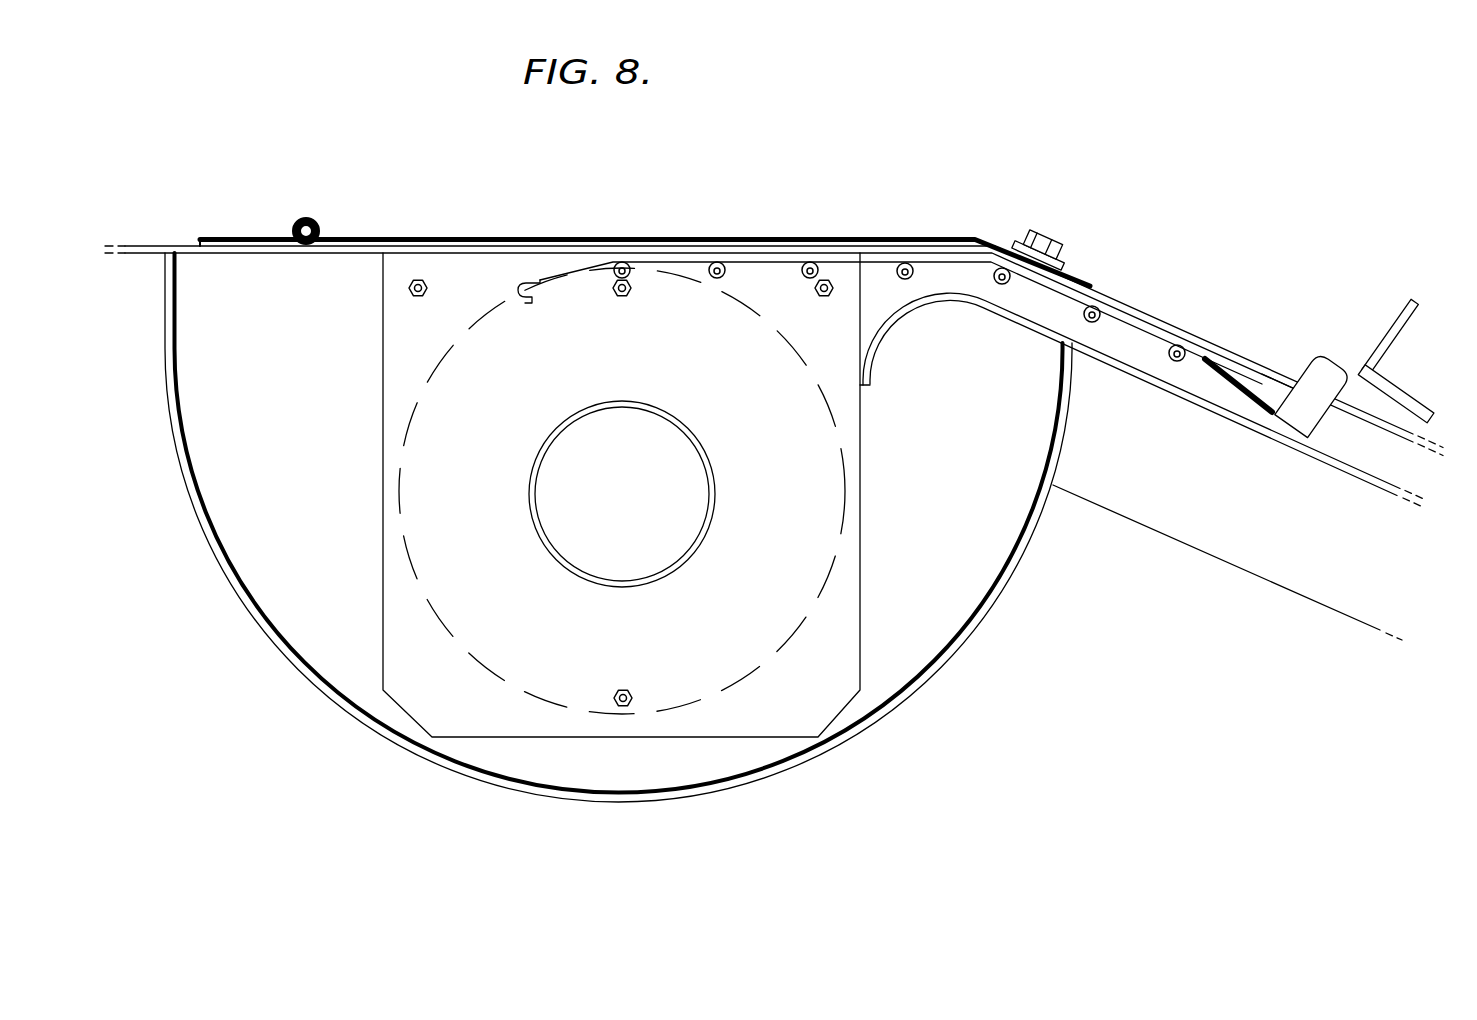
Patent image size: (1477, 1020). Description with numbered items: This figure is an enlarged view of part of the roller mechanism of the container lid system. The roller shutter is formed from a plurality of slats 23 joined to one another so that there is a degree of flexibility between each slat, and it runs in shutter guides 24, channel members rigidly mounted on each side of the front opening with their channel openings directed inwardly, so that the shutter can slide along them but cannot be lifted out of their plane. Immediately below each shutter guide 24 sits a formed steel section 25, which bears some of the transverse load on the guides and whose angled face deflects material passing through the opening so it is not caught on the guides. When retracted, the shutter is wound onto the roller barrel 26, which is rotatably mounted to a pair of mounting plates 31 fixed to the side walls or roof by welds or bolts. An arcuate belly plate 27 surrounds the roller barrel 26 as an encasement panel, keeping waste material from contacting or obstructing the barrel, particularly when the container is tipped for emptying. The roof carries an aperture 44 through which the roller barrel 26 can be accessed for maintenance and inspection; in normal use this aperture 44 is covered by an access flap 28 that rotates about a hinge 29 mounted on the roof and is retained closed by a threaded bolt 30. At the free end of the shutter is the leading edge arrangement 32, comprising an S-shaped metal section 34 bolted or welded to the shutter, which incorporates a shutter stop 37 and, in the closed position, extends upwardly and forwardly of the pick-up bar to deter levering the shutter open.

The slats 23 is at (1172, 345).
The shutter guides 24 is at (1193, 382).
The formed steel section 25 is at (1258, 557).
The roller barrel 26 is at (652, 562).
The arcuate belly plate 27 is at (566, 795).
The access flap 28 is at (477, 237).
The hinge 29 is at (298, 221).
The threaded bolt 30 is at (1038, 232).
The mounting plates 31 is at (847, 630).
The leading edge arrangement 32 is at (1404, 305).
The S-shaped metal section 34 is at (1385, 388).
The shutter stop 37 is at (1318, 378).
The aperture 44 is at (638, 226).